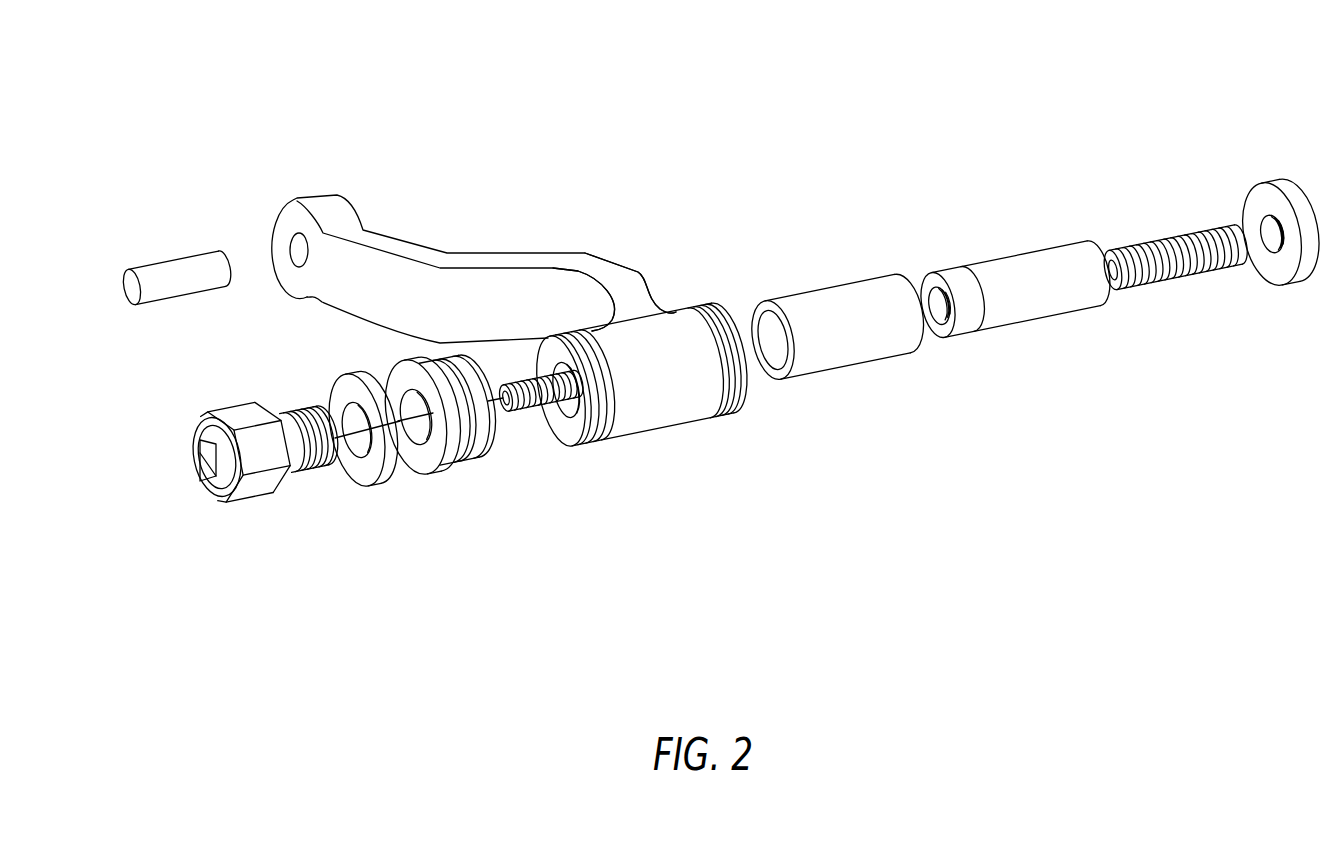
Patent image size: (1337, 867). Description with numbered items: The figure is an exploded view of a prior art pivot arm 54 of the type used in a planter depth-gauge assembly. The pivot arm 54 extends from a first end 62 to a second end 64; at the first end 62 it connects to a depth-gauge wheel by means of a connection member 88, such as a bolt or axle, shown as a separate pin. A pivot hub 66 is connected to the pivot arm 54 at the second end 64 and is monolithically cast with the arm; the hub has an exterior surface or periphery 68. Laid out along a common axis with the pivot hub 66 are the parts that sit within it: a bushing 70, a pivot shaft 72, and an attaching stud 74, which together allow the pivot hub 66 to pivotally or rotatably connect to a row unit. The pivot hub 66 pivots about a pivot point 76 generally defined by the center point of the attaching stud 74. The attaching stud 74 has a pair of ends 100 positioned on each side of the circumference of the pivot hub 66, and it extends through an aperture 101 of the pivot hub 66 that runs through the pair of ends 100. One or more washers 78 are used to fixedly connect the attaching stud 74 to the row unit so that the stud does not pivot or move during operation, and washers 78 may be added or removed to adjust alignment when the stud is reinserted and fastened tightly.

The pivot arm 54 is at (590, 147).
The first end 62 is at (327, 208).
The second end 64 is at (650, 322).
The pivot hub 66 is at (685, 330).
The exterior surface or periphery 68 is at (674, 389).
The bushing 70 is at (868, 350).
The pivot shaft 72 is at (1023, 305).
The attaching stud 74 is at (535, 413).
The pivot point 76 is at (197, 455).
The washers 78 is at (420, 472).
The connection member 88 is at (157, 270).
The pair of ends 100 is at (735, 412).
The aperture 101 is at (572, 428).